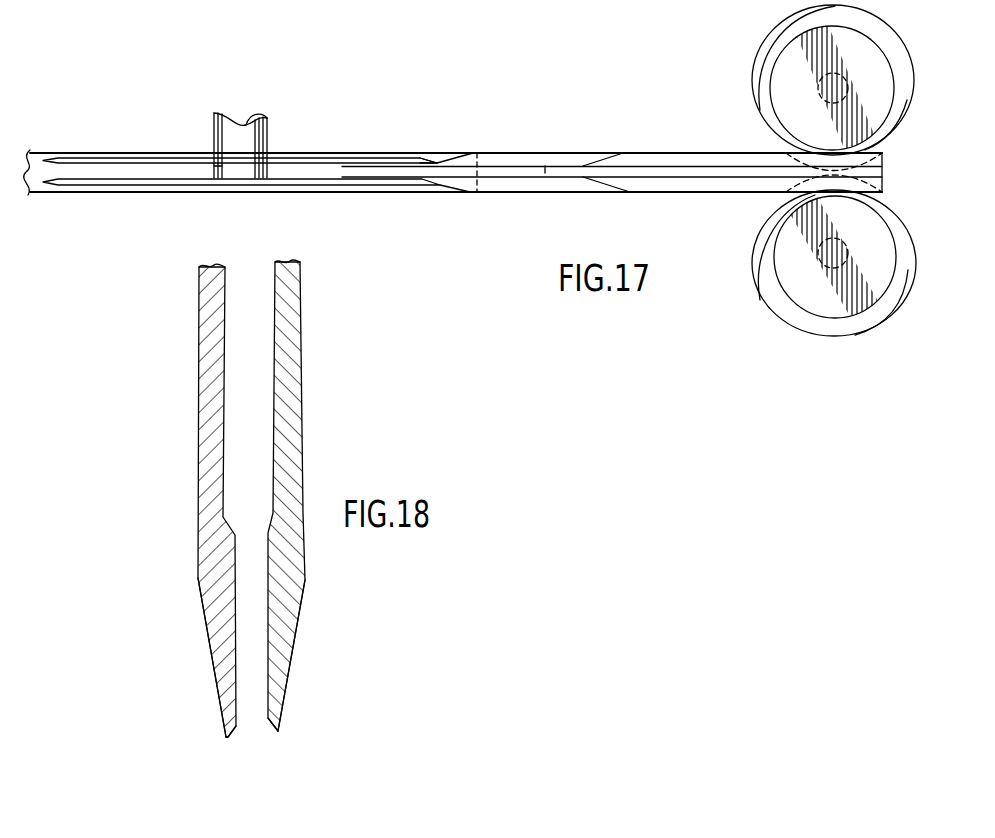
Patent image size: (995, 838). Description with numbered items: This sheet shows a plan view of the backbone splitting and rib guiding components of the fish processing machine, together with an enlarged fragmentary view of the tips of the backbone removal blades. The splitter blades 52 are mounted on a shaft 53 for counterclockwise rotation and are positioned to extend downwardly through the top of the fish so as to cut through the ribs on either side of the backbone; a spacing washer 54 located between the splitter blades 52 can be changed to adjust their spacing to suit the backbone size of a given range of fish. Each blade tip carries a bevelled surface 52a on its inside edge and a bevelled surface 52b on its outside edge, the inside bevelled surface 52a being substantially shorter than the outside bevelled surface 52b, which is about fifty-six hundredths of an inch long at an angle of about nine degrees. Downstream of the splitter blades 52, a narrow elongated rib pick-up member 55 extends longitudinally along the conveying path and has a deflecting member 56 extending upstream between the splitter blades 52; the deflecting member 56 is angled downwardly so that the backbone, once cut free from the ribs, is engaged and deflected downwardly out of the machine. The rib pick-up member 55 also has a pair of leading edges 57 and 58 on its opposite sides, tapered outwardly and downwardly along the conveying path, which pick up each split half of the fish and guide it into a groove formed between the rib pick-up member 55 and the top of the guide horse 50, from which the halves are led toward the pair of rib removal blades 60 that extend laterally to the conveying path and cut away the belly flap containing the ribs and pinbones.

In FIG. 17, the guide horse 50 is at (47, 153).
In FIG. 17, the splitter blades 52 is at (126, 162).
In FIG. 18, the splitter blades 52 is at (198, 421).
In FIG. 18, the bevelled surface on inside edge 52a is at (227, 738).
In FIG. 18, the bevelled surface on outside edge 52b is at (213, 665).
In FIG. 17, the shaft 53 is at (267, 120).
In FIG. 17, the spacing washer 54 is at (216, 167).
In FIG. 17, the rib pick-up member 55 is at (693, 128).
In FIG. 17, the deflecting member 56 is at (431, 124).
In FIG. 17, the leading edge 57 is at (458, 153).
In FIG. 17, the leading edge 58 is at (455, 190).
In FIG. 17, the rib removal blades 60 is at (765, 52).